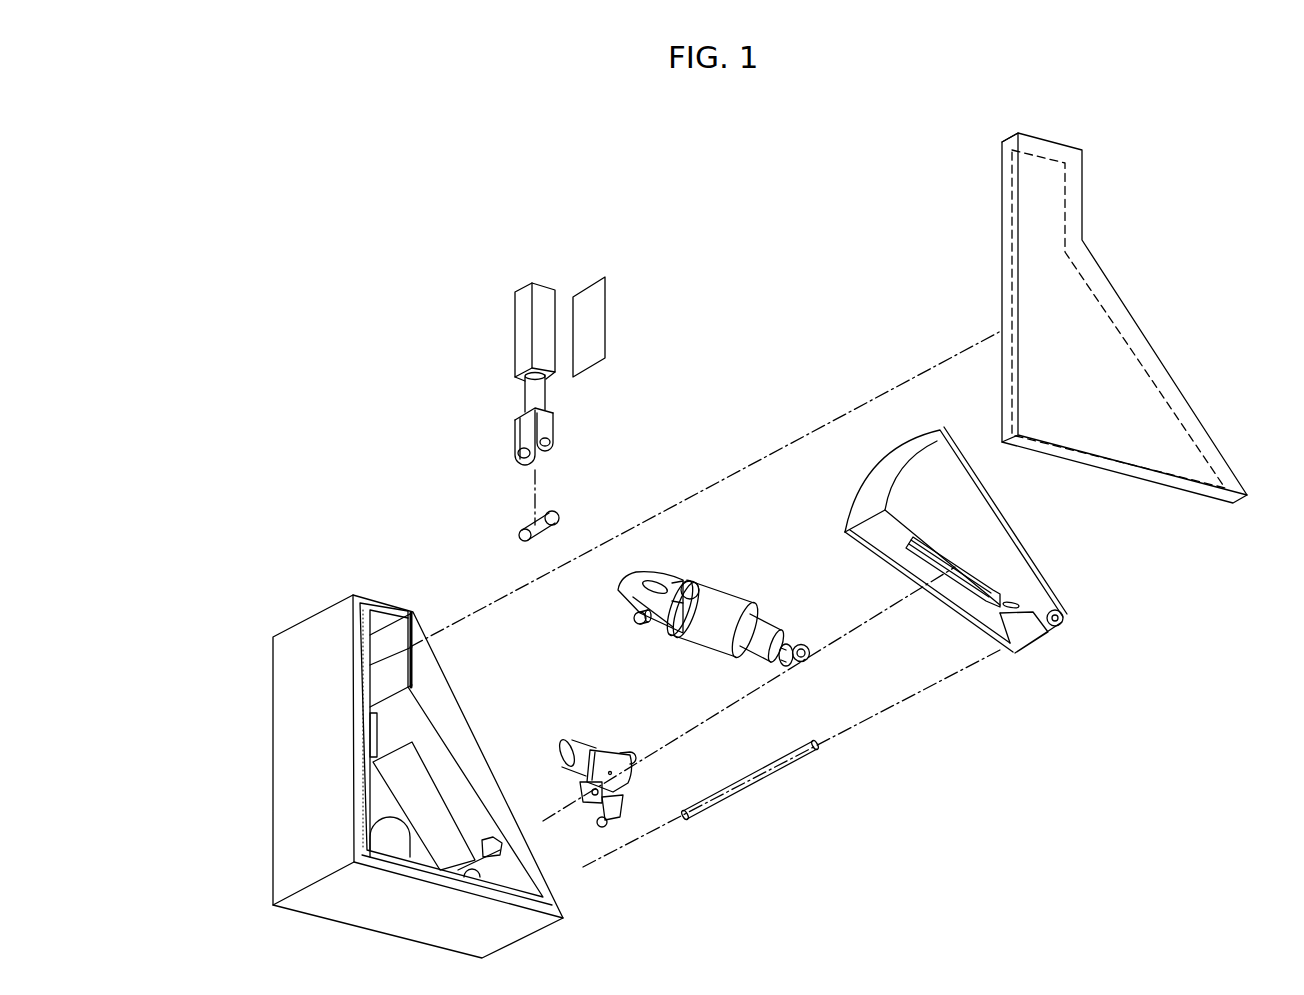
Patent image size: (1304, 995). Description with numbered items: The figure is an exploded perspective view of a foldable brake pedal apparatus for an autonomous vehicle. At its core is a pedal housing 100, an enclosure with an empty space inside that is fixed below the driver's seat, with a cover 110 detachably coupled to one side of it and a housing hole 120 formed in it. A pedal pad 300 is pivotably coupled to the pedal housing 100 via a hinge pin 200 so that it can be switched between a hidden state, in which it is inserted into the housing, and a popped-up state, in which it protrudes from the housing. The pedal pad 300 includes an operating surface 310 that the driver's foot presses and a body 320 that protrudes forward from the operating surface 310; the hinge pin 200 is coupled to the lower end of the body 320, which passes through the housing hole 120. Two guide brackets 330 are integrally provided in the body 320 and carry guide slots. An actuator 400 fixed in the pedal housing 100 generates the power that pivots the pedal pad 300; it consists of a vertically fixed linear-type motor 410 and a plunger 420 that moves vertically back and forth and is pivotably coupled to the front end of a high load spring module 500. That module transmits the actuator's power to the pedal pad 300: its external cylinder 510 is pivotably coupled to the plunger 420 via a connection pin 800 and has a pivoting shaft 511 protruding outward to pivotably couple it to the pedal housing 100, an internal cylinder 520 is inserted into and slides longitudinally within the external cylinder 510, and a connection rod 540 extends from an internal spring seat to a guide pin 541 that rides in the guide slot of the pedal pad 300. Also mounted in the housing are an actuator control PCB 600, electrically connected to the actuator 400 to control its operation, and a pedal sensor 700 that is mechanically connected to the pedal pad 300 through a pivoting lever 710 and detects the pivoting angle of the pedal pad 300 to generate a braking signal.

The pedal housing 100 is at (290, 676).
The cover 110 is at (1140, 345).
The housing hole 120 is at (423, 781).
The hinge pin 200 is at (763, 777).
The pedal pad 300 is at (983, 528).
The operating surface 310 is at (913, 437).
The body 320 is at (877, 487).
The guide brackets 330 is at (1000, 597).
The actuator 400 is at (479, 345).
The linear-type motor 410 is at (545, 295).
The plunger 420 is at (533, 393).
The high load spring module 500 is at (722, 579).
The external cylinder 510 is at (710, 642).
The pivoting shaft 511 is at (710, 583).
The internal cylinder 520 is at (758, 657).
The connection rod 540 is at (788, 642).
The guide pin 541 is at (811, 654).
The actuator control PCB 600 is at (600, 323).
The pedal sensor 700 is at (602, 750).
The pivoting lever 710 is at (613, 798).
The connection pin 800 is at (519, 531).